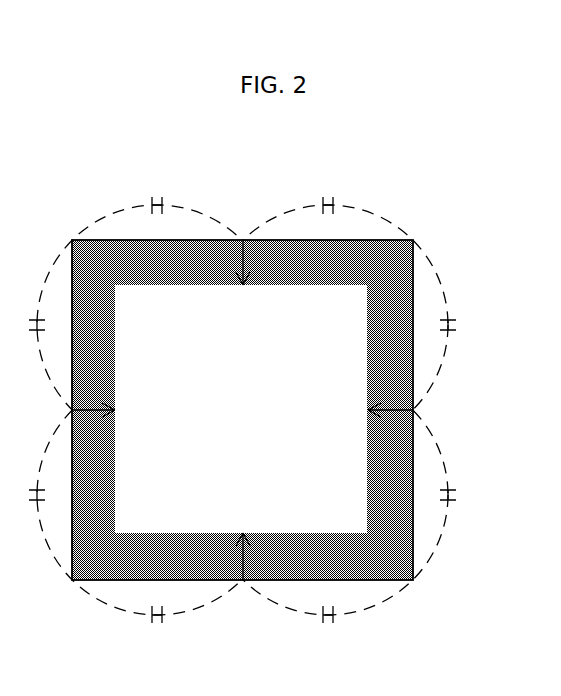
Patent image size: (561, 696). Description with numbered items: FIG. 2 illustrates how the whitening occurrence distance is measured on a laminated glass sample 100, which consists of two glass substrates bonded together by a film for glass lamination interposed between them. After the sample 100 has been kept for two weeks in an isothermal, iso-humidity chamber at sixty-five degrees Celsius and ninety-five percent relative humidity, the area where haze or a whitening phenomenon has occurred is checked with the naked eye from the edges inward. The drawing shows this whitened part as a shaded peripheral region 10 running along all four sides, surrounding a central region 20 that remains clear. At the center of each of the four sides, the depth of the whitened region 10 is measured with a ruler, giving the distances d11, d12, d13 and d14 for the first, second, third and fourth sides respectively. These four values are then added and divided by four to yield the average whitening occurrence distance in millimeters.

The laminated glass 100 is at (63, 167).
The loop-shaped radiator (conductive ring) 10 is at (335, 265).
The inner opening region 20 is at (337, 358).
The whitening occurrence distance of the first side d11 is at (269, 262).
The whitening occurrence distance of the second side d12 is at (389, 393).
The whitening occurrence distance of the third side d13 is at (269, 556).
The whitening occurrence distance of the fourth side d14 is at (95, 393).